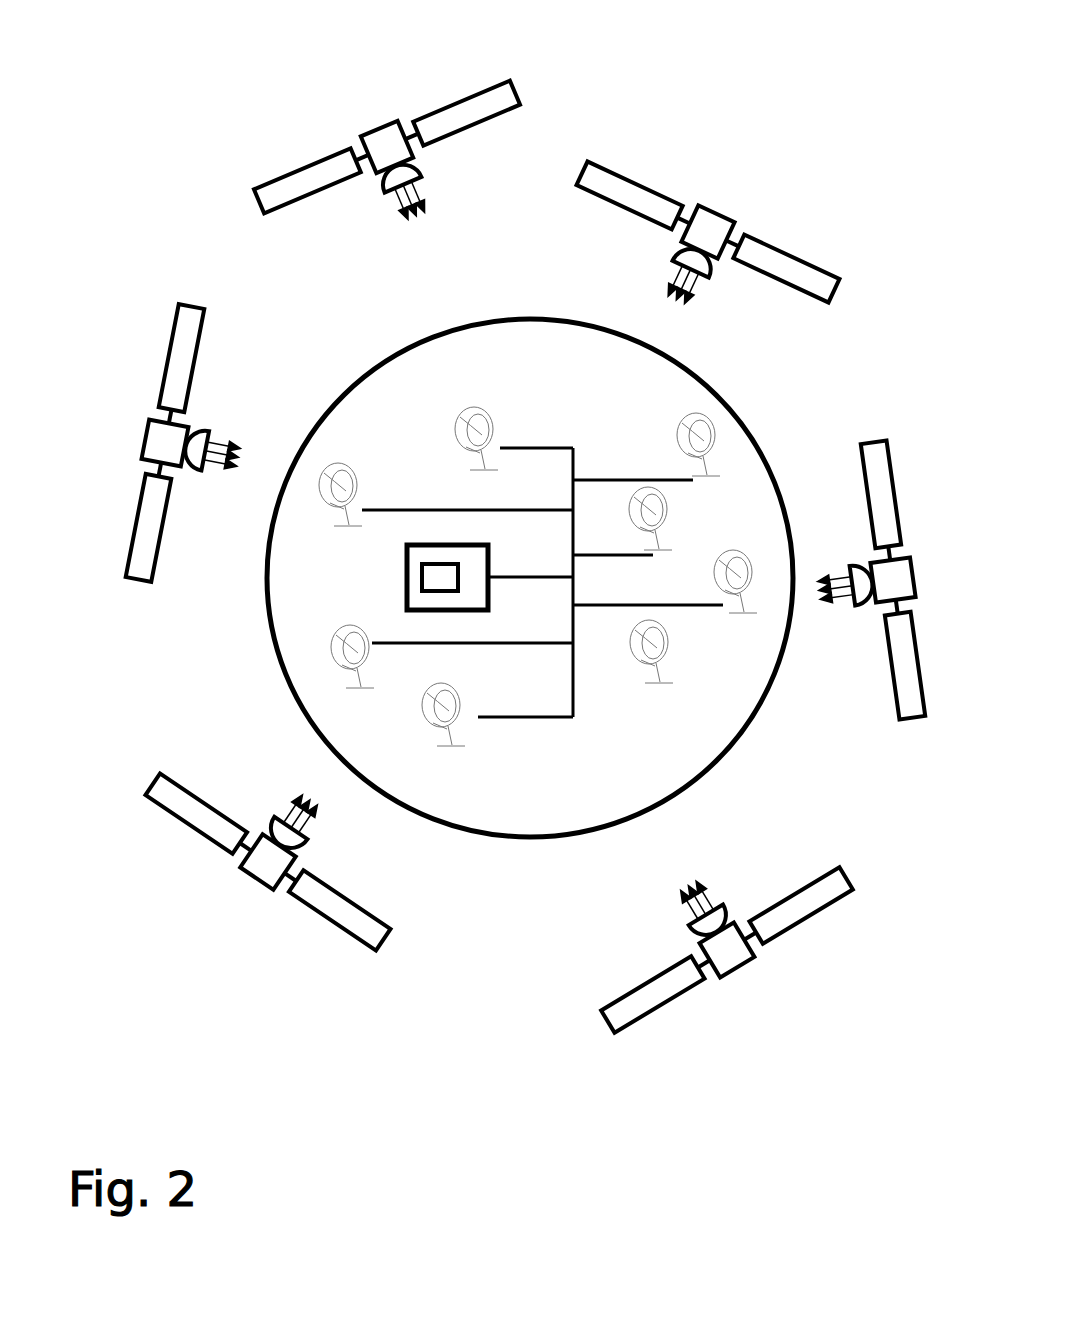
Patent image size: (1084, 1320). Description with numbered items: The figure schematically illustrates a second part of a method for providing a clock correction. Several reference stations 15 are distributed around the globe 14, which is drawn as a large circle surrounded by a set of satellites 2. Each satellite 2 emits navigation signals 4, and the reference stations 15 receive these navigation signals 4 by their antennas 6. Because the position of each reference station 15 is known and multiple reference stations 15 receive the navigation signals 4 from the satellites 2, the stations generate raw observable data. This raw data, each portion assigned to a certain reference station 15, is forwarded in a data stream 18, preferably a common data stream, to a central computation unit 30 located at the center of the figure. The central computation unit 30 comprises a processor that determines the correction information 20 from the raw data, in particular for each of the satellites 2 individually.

The satellite 2 is at (386, 140).
The navigation signal 4 is at (415, 180).
The antenna 6 is at (453, 417).
The globe 14 is at (496, 336).
The reference station 15 is at (498, 425).
The data stream 18 is at (513, 578).
The correction information 20 is at (437, 573).
The central computation unit 30 is at (428, 543).